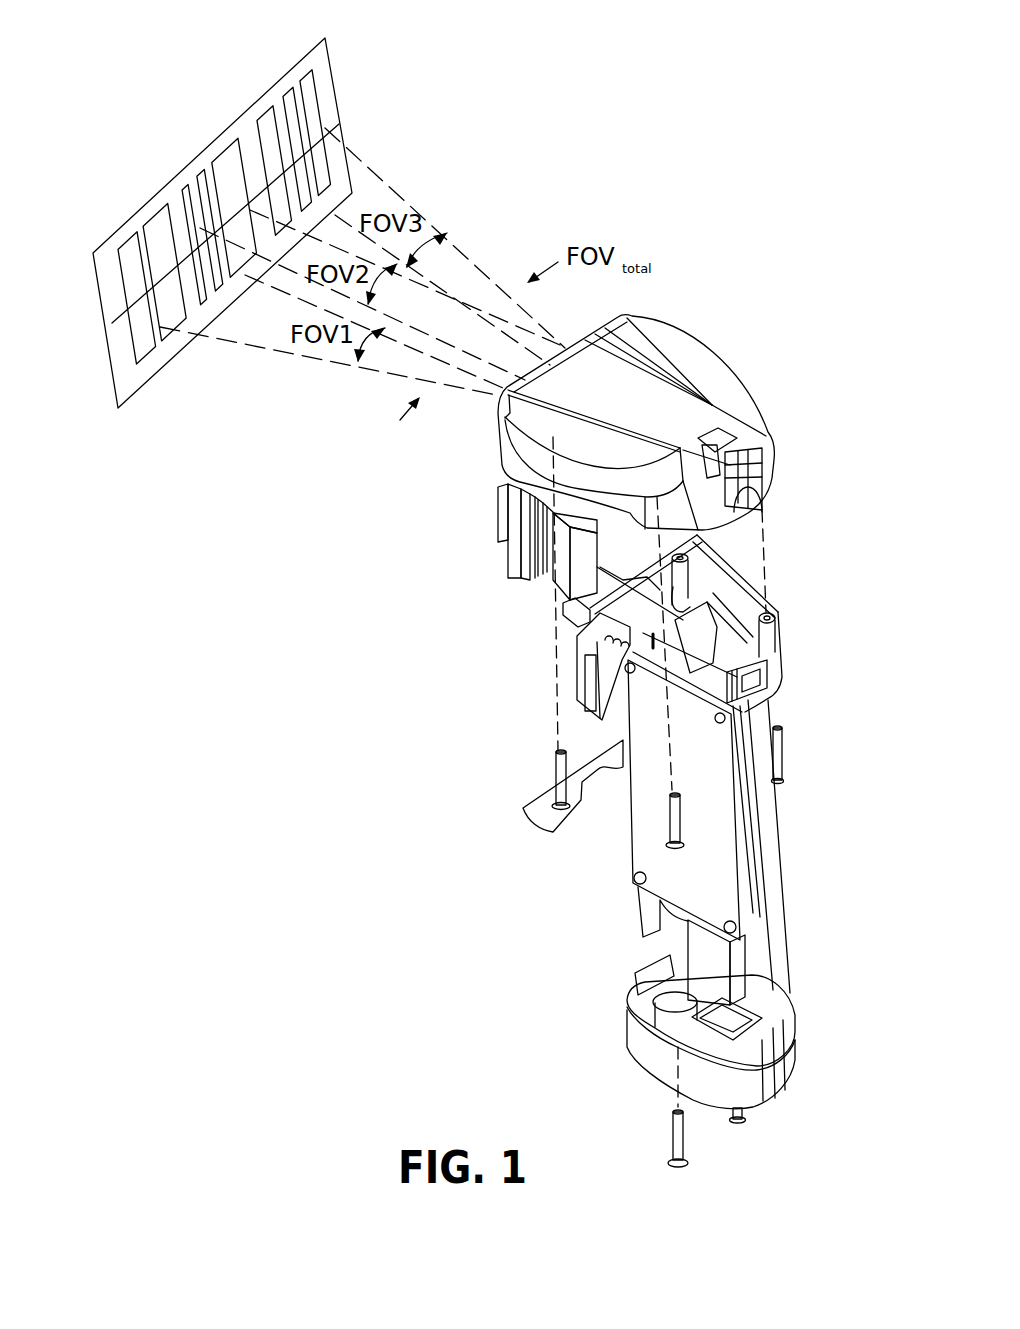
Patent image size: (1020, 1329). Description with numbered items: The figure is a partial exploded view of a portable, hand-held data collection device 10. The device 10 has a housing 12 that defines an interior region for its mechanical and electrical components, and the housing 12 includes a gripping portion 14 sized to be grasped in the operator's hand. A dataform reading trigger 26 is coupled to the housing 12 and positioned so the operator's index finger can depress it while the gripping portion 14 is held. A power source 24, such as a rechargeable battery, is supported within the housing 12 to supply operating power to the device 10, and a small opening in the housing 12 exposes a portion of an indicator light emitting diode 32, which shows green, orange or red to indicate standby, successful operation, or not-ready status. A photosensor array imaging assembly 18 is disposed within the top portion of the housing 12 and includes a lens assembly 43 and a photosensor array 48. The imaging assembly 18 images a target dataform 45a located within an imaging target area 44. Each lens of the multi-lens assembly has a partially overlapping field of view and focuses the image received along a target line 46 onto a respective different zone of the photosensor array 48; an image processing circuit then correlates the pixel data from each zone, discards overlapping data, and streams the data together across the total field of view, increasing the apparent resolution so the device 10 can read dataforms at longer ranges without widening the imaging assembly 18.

The portable data collection device 10 is at (785, 192).
The housing 12 is at (826, 733).
The gripping portion 14 is at (773, 843).
The photosensor array imaging assembly 18 is at (486, 542).
The power source 24 is at (742, 957).
The dataform reading trigger 26 is at (582, 673).
The indicator light emitting diode 32 is at (740, 466).
The lens assembly 43 is at (517, 561).
The imaging target area 44 is at (227, 206).
The target dataform 45a is at (313, 55).
The target line 46 is at (327, 118).
The photosensor array 48 is at (566, 608).